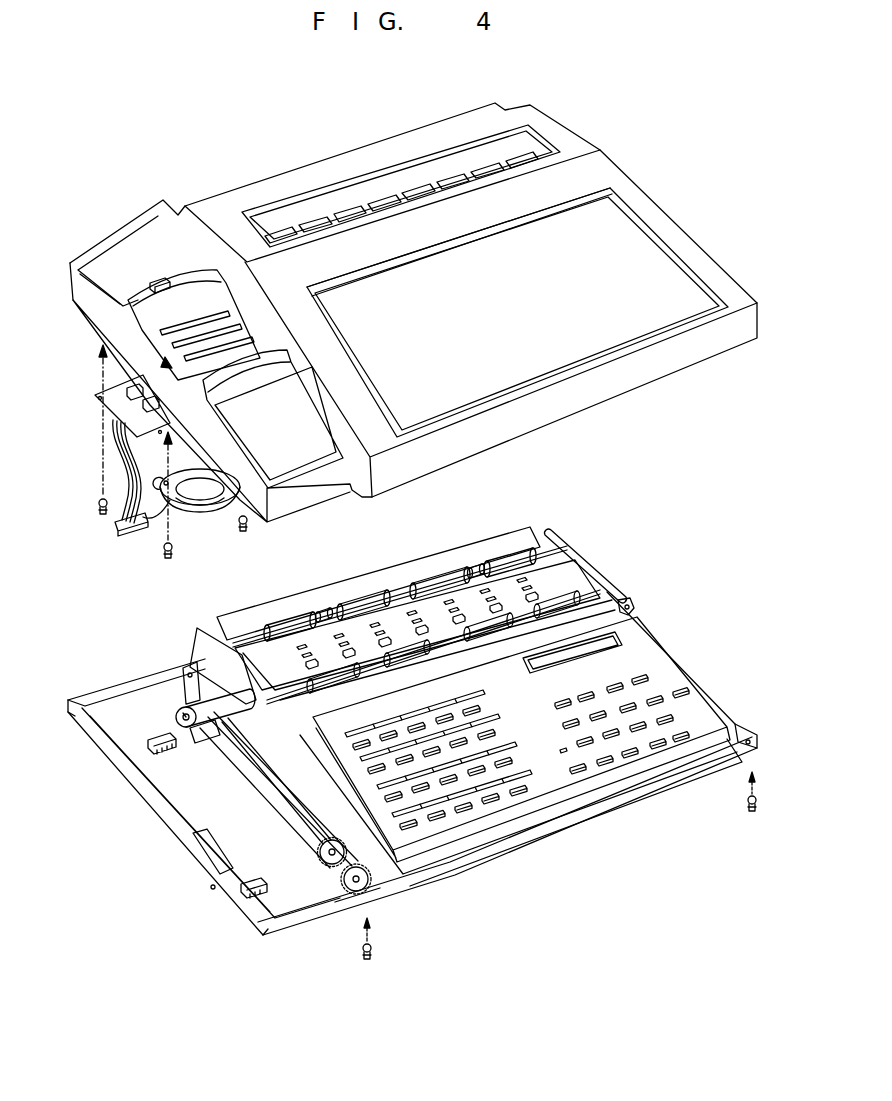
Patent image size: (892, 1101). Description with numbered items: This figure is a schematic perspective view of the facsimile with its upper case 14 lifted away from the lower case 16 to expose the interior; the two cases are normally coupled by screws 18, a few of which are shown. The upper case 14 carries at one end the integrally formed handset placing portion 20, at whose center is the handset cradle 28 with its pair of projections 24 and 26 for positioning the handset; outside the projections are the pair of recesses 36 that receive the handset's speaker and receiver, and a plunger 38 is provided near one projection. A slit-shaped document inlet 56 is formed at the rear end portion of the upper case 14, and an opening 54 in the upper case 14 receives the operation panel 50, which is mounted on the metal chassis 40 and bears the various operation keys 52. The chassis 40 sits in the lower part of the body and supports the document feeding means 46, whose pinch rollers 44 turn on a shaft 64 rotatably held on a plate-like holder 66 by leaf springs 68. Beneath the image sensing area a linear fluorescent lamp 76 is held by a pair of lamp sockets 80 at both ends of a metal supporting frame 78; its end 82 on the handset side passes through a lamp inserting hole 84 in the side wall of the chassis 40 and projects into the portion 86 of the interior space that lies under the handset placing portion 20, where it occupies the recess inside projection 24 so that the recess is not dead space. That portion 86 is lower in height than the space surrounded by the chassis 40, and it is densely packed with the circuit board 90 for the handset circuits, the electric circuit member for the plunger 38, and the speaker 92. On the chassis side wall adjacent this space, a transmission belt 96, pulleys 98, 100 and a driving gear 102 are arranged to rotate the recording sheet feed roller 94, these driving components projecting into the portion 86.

The upper case 14 is at (612, 395).
The lower case 16 is at (140, 672).
The screws 18 is at (752, 808).
The handset placing portion 20 is at (258, 302).
The projection 24 is at (140, 313).
The projection 26 is at (258, 372).
The handset cradle 28 is at (170, 370).
The recesses 36 is at (108, 262).
The plunger 38 is at (157, 277).
The metal chassis 40 is at (200, 652).
The pinch rollers 44 is at (290, 625).
The document feeding means 46 is at (583, 550).
The operation panel 50 is at (650, 650).
The operation keys 52 is at (470, 812).
The opening 54 is at (643, 338).
The document inlet 56 is at (336, 160).
The shaft 64 is at (541, 541).
The holder 66 is at (390, 572).
The leaf springs 68 is at (325, 618).
The fluorescent lamp 76 is at (218, 740).
The supporting frame 78 is at (185, 688).
The lamp sockets 80 is at (175, 720).
The end of lamp 82 is at (203, 735).
The lamp inserting hole 84 is at (258, 745).
The portion of space 86 is at (273, 928).
The circuit board 90 is at (105, 403).
The speaker 92 is at (222, 518).
The recording sheet feed roller 94 is at (555, 845).
The transmission belt 96 is at (300, 823).
The pulley 98 is at (230, 612).
The pulley 100 is at (325, 864).
The gear 102 is at (352, 892).